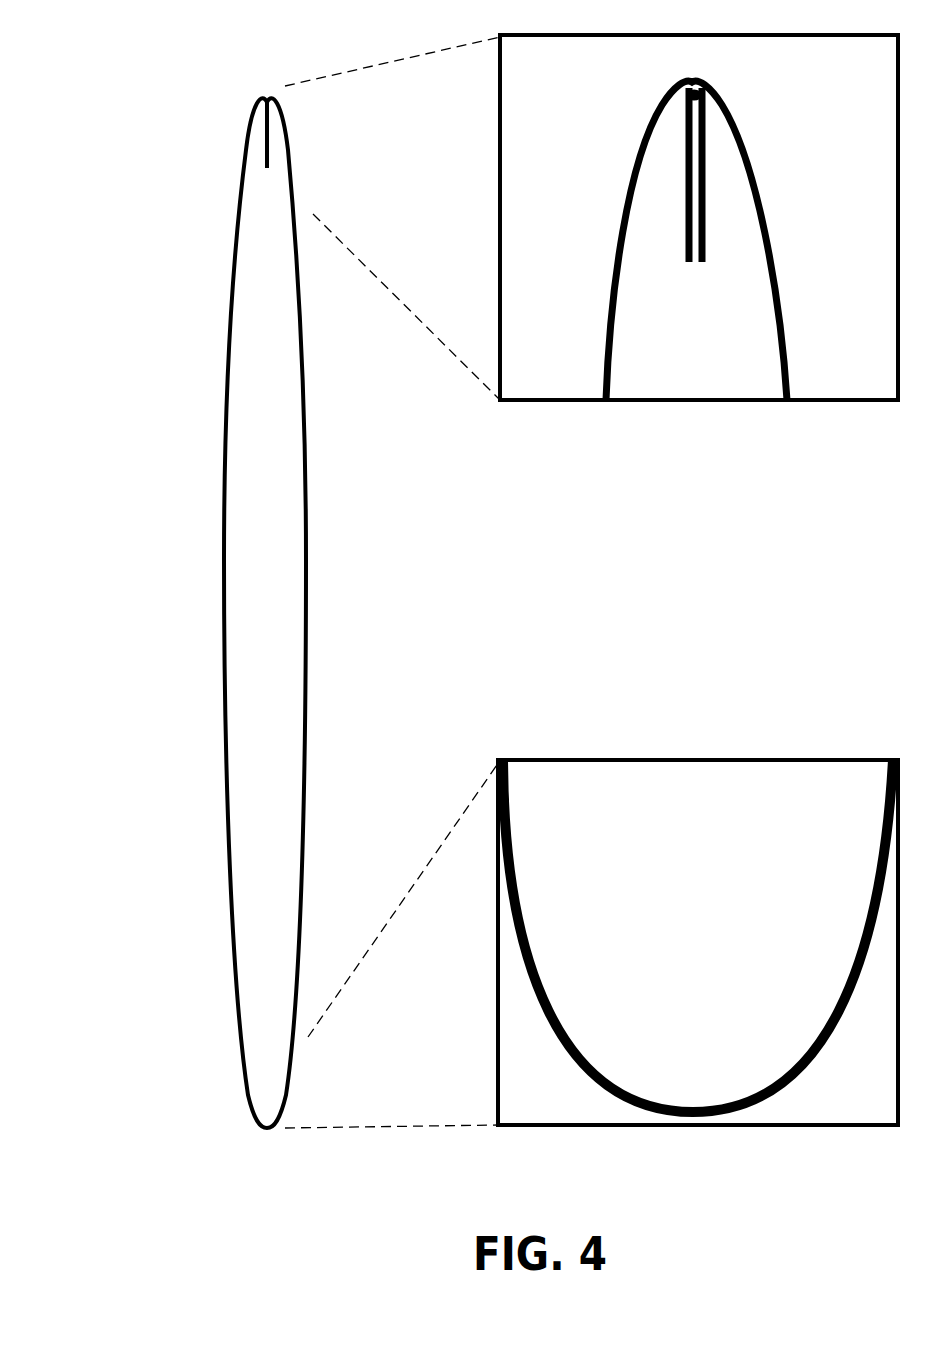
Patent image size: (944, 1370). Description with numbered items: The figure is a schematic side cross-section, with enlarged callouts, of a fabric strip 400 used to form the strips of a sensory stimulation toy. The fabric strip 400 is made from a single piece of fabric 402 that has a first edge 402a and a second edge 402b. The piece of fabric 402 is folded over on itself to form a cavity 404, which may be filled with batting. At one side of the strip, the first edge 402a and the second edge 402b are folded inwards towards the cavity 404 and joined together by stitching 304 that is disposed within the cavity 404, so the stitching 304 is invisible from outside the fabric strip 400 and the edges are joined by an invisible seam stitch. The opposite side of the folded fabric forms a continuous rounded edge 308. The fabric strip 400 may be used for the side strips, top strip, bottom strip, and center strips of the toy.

The fabric strip 400 is at (104, 177).
The single piece of fabric 402 is at (222, 480).
The first edge 402a is at (686, 264).
The second edge 402b is at (704, 264).
The cavity 404 is at (288, 652).
The stitching 304 is at (700, 98).
The continuous rounded edge 308 is at (222, 1126).